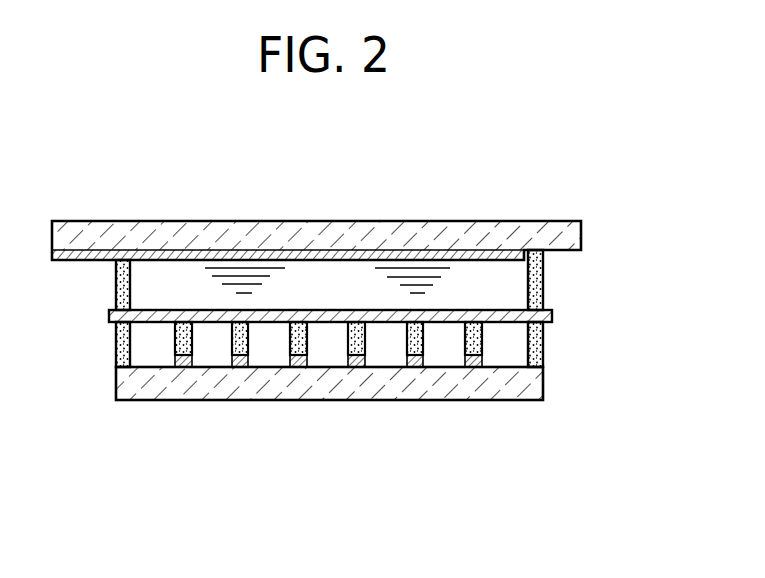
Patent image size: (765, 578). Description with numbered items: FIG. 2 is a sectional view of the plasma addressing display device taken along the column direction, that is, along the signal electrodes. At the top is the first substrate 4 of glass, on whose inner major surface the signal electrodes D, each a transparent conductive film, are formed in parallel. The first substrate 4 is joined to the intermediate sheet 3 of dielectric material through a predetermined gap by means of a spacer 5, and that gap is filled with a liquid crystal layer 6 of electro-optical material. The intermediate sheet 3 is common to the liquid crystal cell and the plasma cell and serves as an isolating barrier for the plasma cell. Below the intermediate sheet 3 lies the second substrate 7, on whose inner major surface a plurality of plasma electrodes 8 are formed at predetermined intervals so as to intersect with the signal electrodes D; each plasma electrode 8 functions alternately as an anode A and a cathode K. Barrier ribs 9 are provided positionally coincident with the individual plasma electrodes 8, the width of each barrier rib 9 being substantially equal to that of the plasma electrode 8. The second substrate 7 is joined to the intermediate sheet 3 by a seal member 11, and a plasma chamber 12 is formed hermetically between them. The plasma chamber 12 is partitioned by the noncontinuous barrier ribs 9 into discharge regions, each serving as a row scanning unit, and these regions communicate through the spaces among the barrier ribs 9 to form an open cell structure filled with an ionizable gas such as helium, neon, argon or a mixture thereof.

The first substrate 4 is at (245, 222).
The signal electrodes D is at (373, 253).
The spacer 5 is at (545, 267).
The liquid crystal layer 6 is at (524, 290).
The intermediate sheet 3 is at (553, 318).
The second substrate 7 is at (358, 370).
The barrier ribs 9 is at (192, 350).
The plasma electrodes 8 is at (455, 435).
The anode A is at (414, 368).
The cathode K is at (470, 368).
The seal member 11 is at (545, 345).
The plasma chamber 12 is at (512, 348).